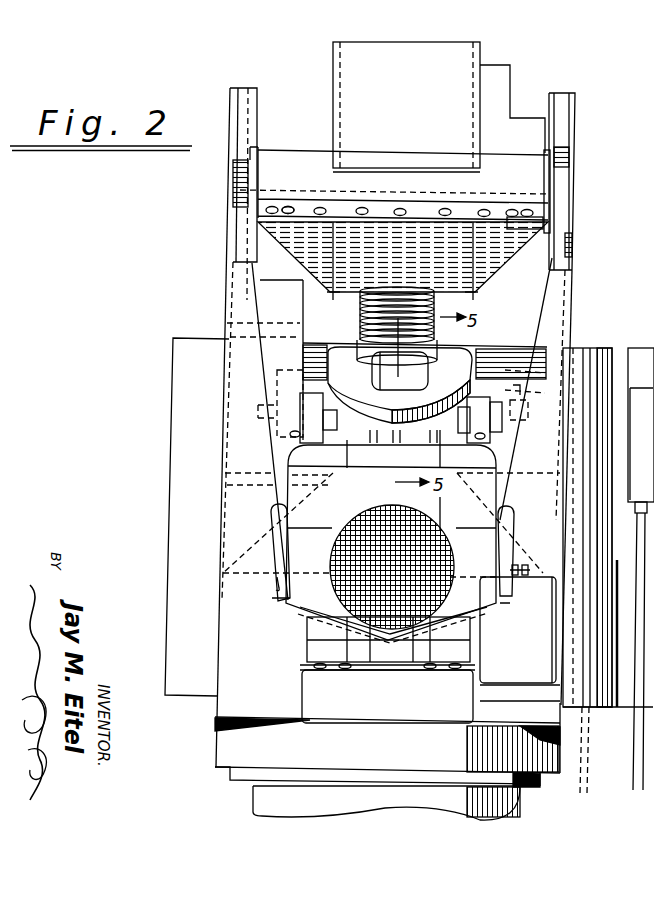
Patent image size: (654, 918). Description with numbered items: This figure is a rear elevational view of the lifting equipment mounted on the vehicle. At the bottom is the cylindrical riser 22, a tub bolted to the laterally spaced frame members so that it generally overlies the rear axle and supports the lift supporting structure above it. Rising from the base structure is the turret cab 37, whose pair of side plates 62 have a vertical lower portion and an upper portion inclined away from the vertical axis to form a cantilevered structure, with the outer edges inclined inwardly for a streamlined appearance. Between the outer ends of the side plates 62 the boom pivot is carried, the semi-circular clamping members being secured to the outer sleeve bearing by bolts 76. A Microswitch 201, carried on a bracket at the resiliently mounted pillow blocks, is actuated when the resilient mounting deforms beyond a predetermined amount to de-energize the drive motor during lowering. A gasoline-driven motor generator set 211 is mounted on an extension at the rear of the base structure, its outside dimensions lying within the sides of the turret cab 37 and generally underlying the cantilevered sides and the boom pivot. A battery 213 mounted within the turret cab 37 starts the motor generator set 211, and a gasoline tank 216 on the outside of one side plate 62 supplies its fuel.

The turret cab 37 is at (222, 258).
The side plates 62 is at (233, 266).
The bolts 76 is at (288, 206).
The Microswitch 201 is at (513, 397).
The gasoline tank 216 is at (176, 342).
The motor generator set 211 is at (325, 605).
The battery 213 is at (536, 657).
The cylindrical riser 22 is at (268, 800).